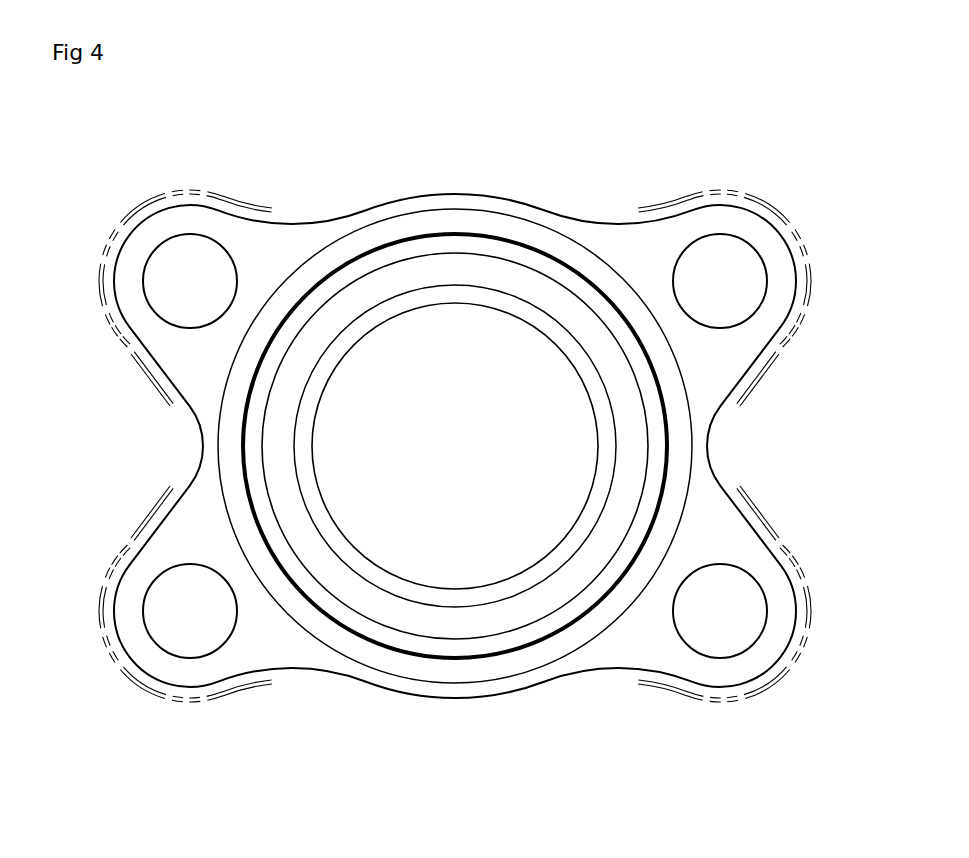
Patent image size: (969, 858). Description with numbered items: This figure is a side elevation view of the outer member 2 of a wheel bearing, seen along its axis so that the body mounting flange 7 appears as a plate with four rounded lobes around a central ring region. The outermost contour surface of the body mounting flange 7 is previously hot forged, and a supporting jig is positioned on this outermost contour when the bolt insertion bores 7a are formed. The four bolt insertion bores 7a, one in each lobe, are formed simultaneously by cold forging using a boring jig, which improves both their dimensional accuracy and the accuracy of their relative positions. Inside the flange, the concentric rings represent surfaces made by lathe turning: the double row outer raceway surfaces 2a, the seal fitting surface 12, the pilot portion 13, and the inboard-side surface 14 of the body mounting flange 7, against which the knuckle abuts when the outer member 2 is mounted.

The outer member 2 is at (777, 162).
The double row outer raceway surface 2a is at (477, 300).
The body mounting flange 7 is at (200, 208).
The bolt insertion bore 7a is at (190, 328).
The seal fitting surface 12 is at (508, 266).
The pilot portion 13 is at (458, 212).
The inboard-side surface 14 is at (168, 353).